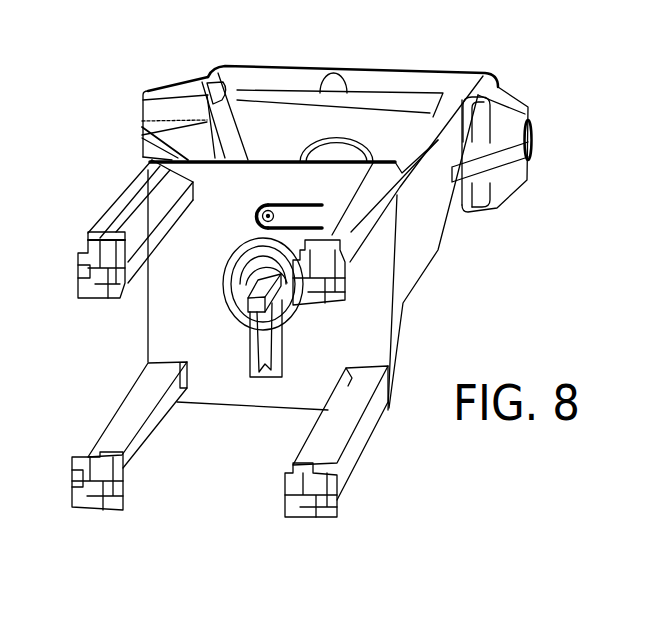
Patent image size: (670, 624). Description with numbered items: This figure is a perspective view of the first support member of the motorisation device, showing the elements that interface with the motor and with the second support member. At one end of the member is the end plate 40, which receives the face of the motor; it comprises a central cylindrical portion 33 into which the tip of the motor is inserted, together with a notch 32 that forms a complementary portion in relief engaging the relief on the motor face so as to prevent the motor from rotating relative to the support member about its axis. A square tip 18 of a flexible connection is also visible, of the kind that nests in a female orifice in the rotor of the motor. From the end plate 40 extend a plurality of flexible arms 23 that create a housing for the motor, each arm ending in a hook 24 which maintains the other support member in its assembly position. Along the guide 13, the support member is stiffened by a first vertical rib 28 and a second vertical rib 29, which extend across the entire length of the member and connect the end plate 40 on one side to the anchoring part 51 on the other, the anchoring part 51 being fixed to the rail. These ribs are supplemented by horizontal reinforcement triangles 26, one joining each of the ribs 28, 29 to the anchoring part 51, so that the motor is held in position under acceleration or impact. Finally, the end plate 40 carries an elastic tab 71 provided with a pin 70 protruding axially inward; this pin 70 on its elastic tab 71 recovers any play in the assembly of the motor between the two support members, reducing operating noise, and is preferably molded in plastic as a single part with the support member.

The guide 13 is at (345, 158).
The square tip 18 is at (248, 312).
The flexible arm 23 is at (134, 202).
The hook 24 is at (88, 277).
The horizontal reinforcement triangle 26 is at (488, 162).
The first vertical rib 28 is at (433, 138).
The second vertical rib 29 is at (212, 118).
The notch 32 is at (267, 362).
The central cylindrical portion 33 is at (283, 306).
The end plate 40 is at (203, 292).
The anchoring part 51 is at (467, 86).
The pin 70 is at (262, 207).
The elastic tab 71 is at (293, 215).